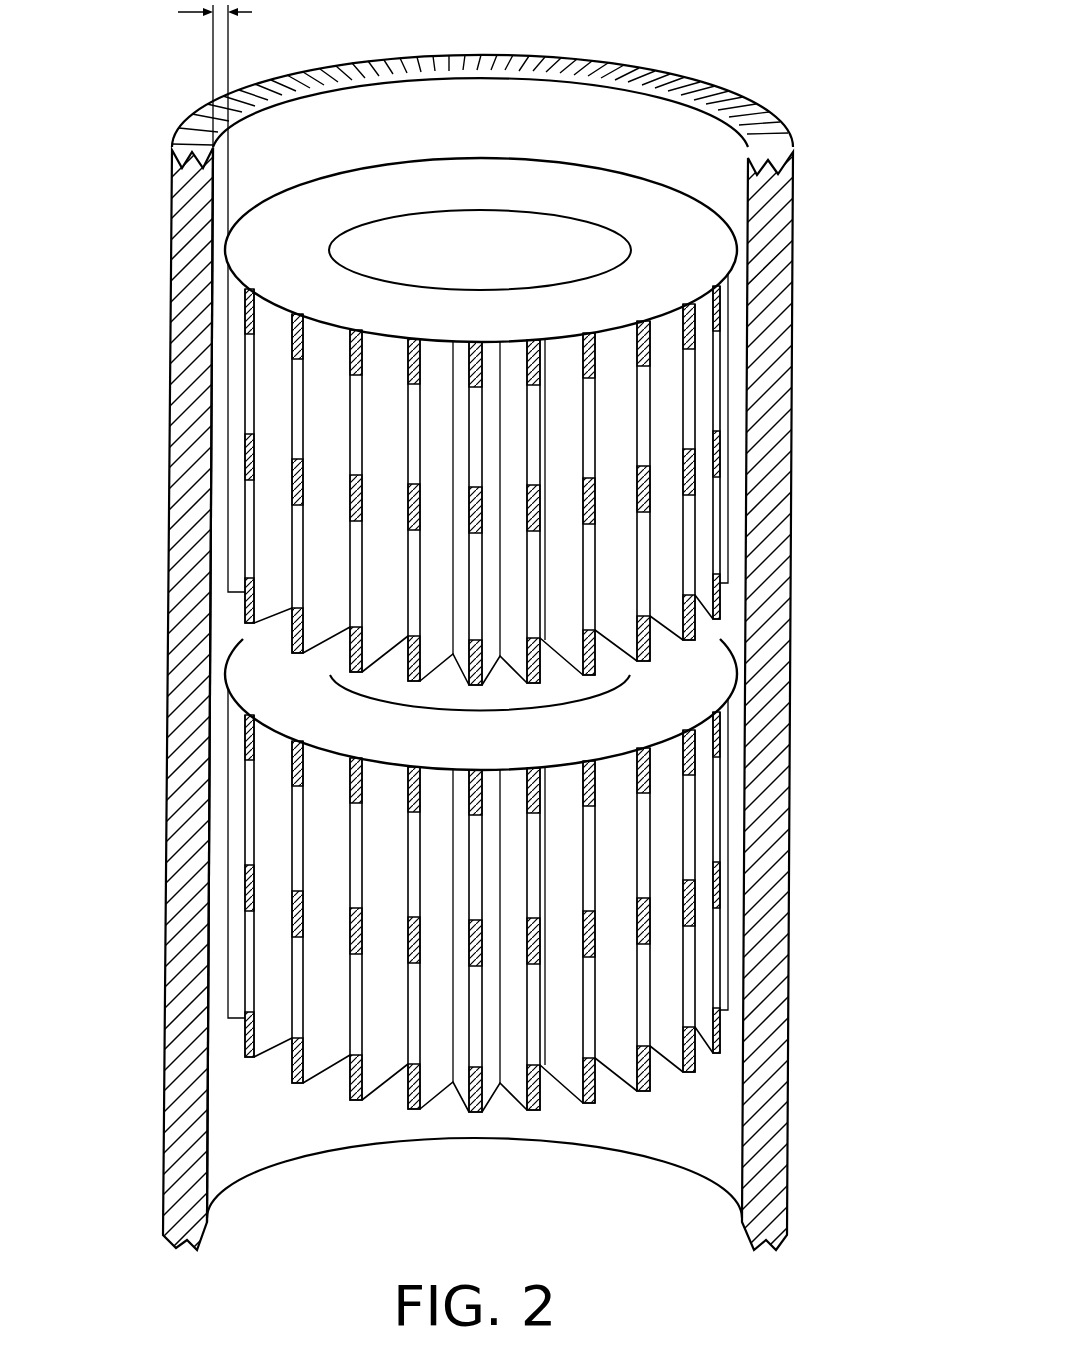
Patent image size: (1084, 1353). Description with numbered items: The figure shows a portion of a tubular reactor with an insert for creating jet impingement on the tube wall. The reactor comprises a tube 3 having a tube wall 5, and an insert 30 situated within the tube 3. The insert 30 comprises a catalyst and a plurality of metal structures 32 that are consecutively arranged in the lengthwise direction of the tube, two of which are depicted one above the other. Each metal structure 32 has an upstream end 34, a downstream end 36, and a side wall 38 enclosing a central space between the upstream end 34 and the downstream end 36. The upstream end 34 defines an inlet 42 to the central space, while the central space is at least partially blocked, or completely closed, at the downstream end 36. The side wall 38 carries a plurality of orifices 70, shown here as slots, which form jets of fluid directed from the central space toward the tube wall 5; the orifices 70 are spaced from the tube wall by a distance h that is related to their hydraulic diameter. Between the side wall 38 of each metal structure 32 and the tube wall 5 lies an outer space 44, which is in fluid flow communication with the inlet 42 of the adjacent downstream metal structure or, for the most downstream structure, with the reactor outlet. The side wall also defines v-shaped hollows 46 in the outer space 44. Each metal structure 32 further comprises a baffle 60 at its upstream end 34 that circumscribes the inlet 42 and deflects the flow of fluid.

The tube 3 is at (122, 290).
The tube wall 5 is at (175, 205).
The insert 30 is at (762, 508).
The metal structures 32 is at (203, 561).
The upstream end 34 is at (648, 160).
The downstream end 36 is at (735, 634).
The side wall 38 is at (748, 680).
The inlet 42 is at (523, 243).
The outer space 44 is at (743, 570).
The hollows 46 is at (280, 638).
The baffle 60 is at (675, 227).
The orifices 70 is at (300, 432).